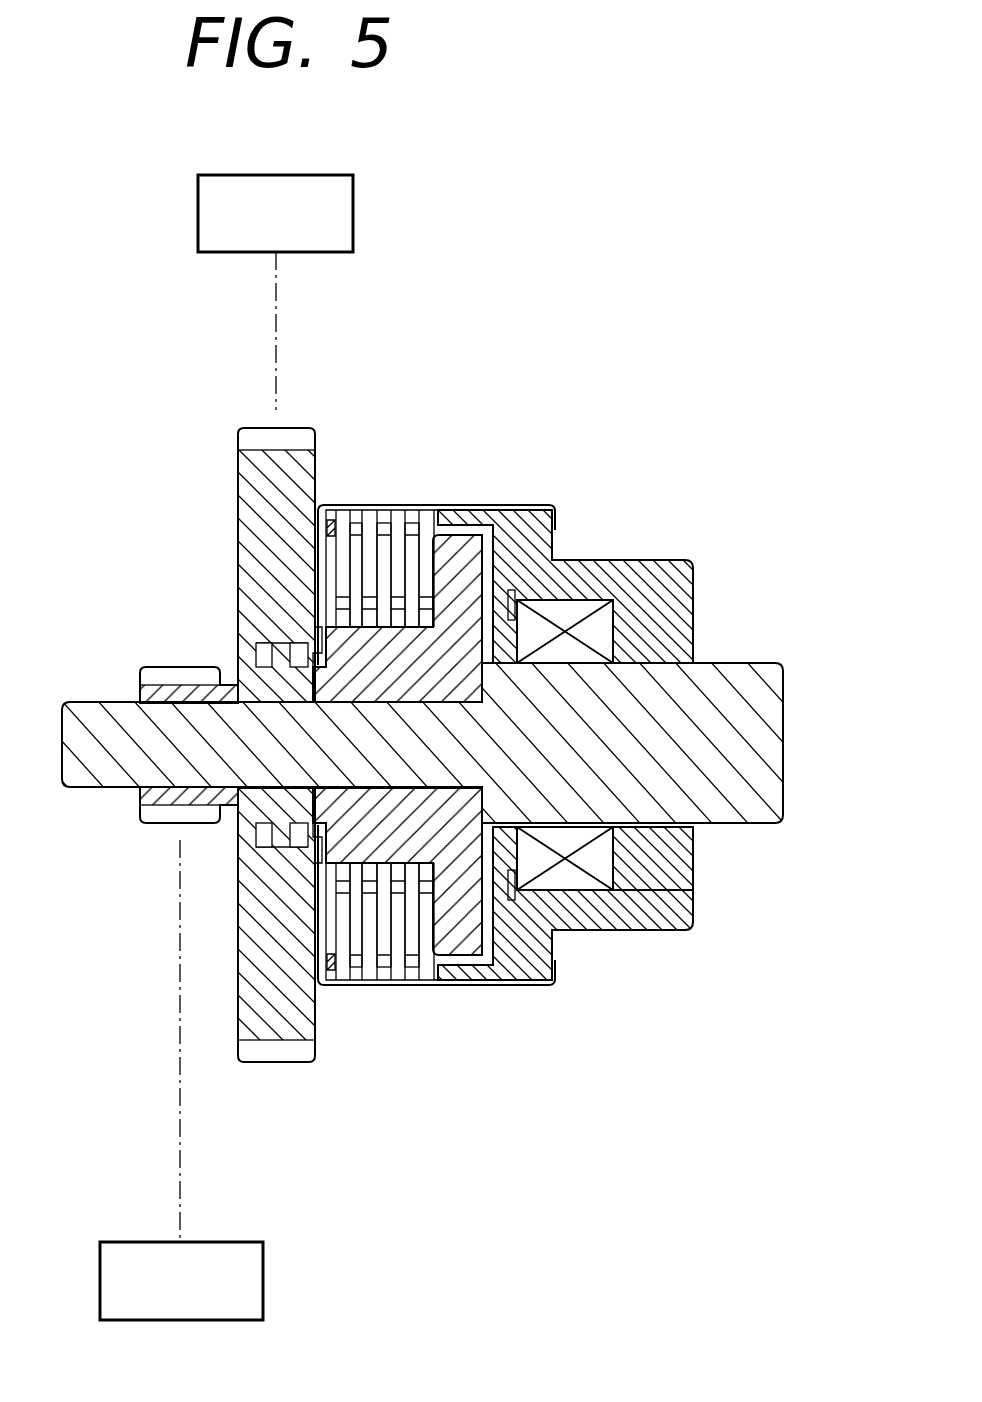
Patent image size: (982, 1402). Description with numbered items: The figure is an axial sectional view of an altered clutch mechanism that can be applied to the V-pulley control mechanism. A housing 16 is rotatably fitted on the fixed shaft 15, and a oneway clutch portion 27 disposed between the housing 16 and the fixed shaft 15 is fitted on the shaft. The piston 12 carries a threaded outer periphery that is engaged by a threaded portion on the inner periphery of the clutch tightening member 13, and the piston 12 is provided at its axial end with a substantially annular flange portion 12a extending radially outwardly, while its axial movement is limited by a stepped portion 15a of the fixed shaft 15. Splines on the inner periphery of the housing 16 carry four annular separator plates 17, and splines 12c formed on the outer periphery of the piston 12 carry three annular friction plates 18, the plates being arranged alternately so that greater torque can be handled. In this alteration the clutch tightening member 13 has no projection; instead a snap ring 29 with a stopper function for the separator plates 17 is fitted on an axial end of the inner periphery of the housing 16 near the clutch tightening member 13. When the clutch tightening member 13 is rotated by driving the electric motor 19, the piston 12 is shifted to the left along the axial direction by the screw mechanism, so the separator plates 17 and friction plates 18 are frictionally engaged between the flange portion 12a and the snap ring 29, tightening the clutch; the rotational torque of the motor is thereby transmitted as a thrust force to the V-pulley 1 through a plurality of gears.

The V-pulley 1 is at (263, 1272).
The piston 12 is at (165, 686).
The flange portion 12a is at (473, 557).
The splines 12c is at (397, 627).
The clutch tightening member 13 is at (245, 545).
The fixed shaft 15 is at (770, 738).
The stepped portion 15a is at (620, 850).
The housing 16 is at (642, 567).
The separator plates 17 is at (345, 520).
The friction plates 18 is at (410, 538).
The electric motor 19 is at (353, 208).
The oneway clutch portion 27 is at (573, 883).
The snap ring 29 is at (325, 957).